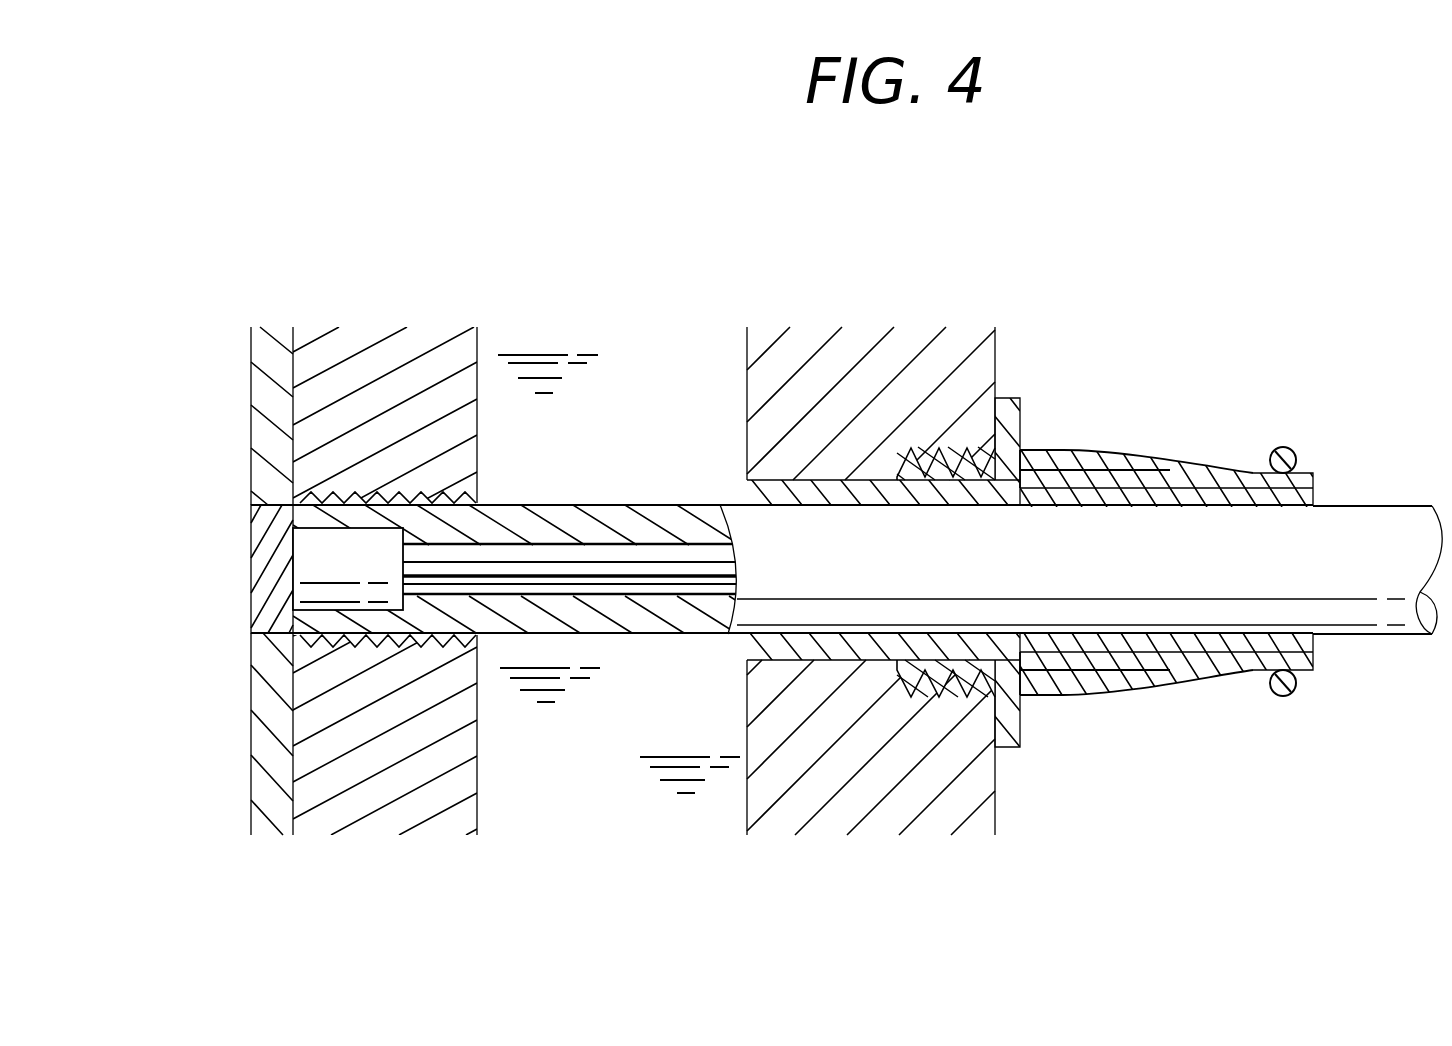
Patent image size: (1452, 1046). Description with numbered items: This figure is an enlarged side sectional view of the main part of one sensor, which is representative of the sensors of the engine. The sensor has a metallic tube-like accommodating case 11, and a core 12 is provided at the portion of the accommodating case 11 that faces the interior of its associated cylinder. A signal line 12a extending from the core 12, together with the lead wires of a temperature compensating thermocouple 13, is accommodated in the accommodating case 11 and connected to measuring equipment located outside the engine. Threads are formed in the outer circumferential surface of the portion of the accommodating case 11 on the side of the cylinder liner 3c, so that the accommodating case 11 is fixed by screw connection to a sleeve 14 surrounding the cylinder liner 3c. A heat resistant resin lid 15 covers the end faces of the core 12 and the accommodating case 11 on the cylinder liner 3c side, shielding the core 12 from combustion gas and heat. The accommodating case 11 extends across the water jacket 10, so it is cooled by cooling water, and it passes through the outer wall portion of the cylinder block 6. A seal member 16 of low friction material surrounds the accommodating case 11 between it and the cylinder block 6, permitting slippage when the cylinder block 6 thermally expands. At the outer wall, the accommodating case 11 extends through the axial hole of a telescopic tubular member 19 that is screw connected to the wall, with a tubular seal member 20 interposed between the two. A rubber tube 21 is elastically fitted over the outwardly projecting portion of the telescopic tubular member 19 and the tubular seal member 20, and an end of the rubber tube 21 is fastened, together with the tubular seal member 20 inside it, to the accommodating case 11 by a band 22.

The cylinder liner 3c is at (250, 375).
The sleeve 14 is at (386, 390).
The lid 15 is at (262, 572).
The accommodating case 11 is at (665, 504).
The core 12 is at (345, 548).
The signal line 12a is at (697, 552).
The temperature compensating thermocouple 13 is at (415, 600).
The cylinder block 6 is at (973, 793).
The seal member 16 is at (860, 480).
The telescopic tubular member 19 is at (1010, 398).
The tubular seal member 20 is at (1190, 464).
The rubber tube 21 is at (1090, 455).
The band 22 is at (1290, 452).
The water jacket 10 is at (642, 436).